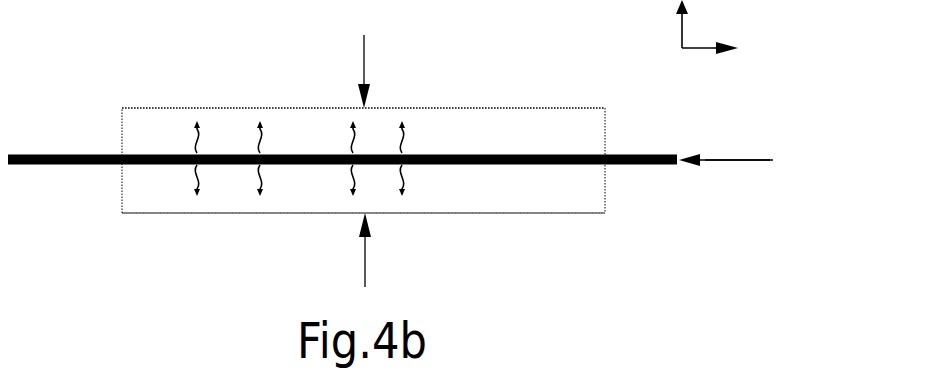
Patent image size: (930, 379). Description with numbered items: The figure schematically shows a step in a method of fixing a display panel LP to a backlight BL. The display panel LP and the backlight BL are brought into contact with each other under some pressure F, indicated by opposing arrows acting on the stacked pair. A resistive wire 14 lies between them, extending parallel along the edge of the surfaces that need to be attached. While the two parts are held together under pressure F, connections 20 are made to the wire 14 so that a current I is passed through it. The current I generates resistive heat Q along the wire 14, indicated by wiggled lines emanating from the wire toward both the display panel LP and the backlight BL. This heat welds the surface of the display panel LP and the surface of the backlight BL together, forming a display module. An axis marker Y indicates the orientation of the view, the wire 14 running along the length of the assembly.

The resistive wire 14 is at (632, 155).
The connections 20 is at (747, 164).
The current I is at (708, 159).
The pressure F is at (346, 161).
The resistive heat Q is at (299, 161).
The display panel LP is at (473, 144).
The backlight BL is at (473, 194).
The Y axis Y is at (717, 31).